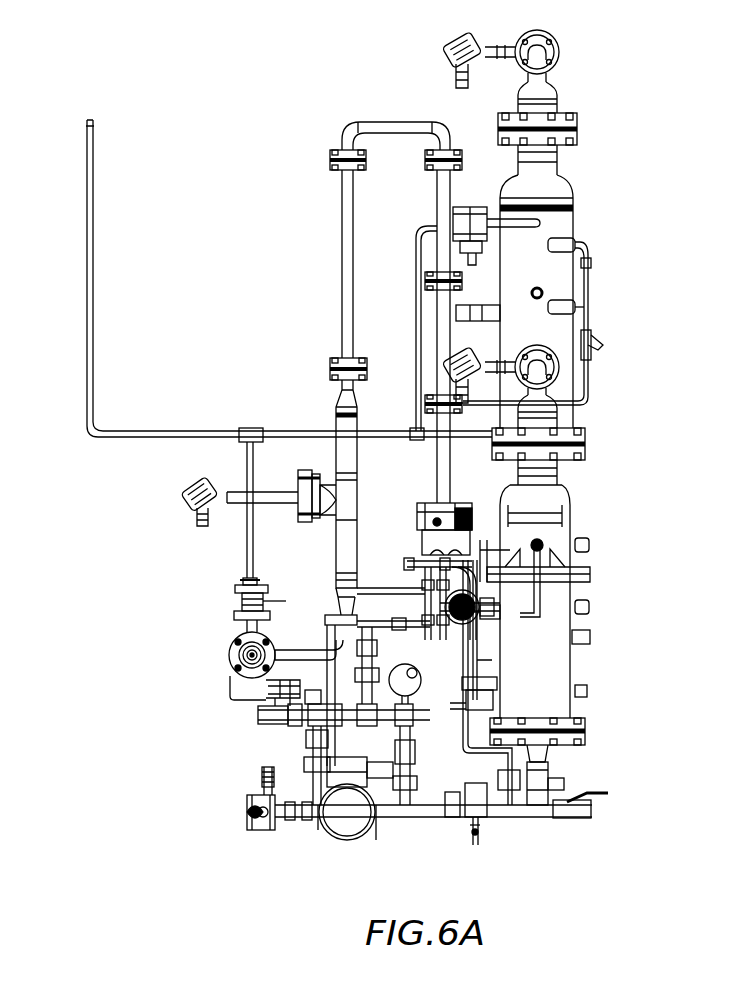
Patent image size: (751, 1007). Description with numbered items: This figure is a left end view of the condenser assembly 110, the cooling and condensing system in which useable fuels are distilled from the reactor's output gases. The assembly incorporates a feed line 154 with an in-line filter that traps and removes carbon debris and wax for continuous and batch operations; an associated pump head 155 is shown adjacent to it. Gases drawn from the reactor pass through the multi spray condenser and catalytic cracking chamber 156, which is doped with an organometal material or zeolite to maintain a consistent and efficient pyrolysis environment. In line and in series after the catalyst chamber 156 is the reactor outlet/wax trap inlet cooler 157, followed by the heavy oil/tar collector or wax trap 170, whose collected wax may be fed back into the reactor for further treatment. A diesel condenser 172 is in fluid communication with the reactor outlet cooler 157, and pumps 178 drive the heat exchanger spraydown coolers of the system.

The condenser assembly 110 is at (689, 133).
The feed line 154 is at (228, 663).
The pump head 155 is at (237, 650).
The catalytic cracking chamber 156 is at (345, 425).
The reactor outlet/wax trap inlet cooler 157 is at (445, 352).
The wax trap 170 is at (552, 547).
The diesel condenser 172 is at (560, 227).
The pump 178 is at (340, 820).